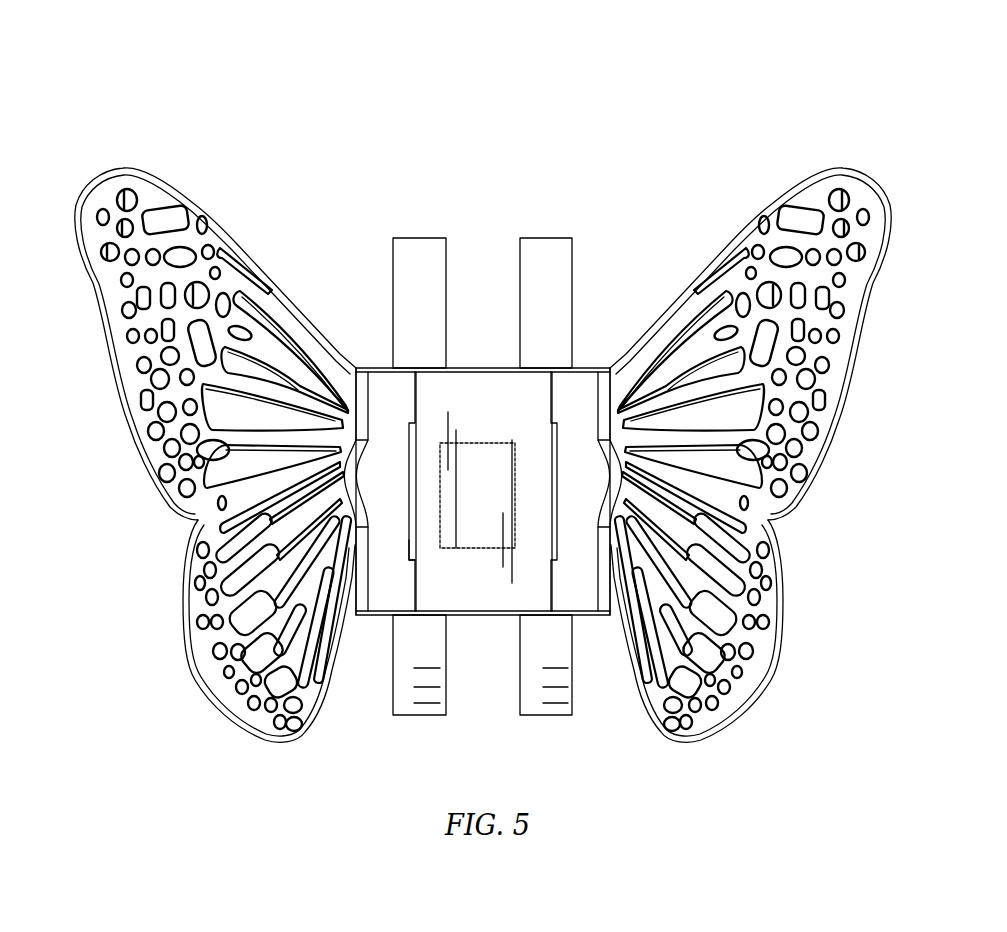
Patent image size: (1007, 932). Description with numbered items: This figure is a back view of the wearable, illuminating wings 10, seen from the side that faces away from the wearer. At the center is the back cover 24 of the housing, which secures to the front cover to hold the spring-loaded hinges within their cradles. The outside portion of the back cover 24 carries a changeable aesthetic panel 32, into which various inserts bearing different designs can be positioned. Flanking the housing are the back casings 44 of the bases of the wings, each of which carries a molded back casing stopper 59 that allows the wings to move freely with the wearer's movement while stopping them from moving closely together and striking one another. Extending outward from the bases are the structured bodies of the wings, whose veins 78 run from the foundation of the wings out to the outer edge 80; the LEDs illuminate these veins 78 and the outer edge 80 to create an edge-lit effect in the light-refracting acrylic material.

The wearable, illuminating wings 10 is at (457, 85).
The back cover 24 is at (518, 407).
The changeable aesthetic panel 32 is at (478, 532).
The back casing 44 is at (400, 418).
The back casing stopper 59 is at (412, 545).
The veins 78 is at (302, 437).
The outer edge 80 is at (122, 412).